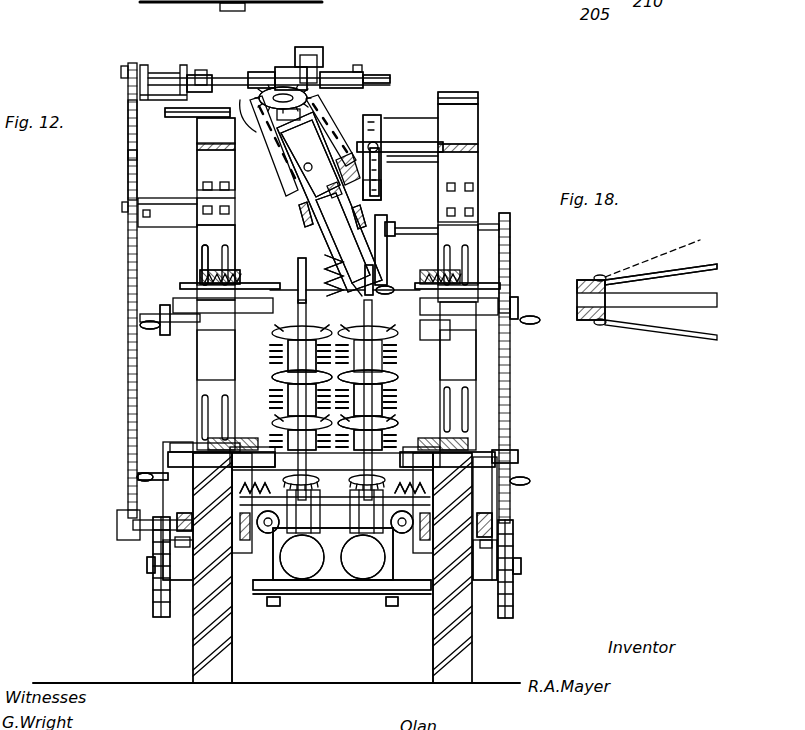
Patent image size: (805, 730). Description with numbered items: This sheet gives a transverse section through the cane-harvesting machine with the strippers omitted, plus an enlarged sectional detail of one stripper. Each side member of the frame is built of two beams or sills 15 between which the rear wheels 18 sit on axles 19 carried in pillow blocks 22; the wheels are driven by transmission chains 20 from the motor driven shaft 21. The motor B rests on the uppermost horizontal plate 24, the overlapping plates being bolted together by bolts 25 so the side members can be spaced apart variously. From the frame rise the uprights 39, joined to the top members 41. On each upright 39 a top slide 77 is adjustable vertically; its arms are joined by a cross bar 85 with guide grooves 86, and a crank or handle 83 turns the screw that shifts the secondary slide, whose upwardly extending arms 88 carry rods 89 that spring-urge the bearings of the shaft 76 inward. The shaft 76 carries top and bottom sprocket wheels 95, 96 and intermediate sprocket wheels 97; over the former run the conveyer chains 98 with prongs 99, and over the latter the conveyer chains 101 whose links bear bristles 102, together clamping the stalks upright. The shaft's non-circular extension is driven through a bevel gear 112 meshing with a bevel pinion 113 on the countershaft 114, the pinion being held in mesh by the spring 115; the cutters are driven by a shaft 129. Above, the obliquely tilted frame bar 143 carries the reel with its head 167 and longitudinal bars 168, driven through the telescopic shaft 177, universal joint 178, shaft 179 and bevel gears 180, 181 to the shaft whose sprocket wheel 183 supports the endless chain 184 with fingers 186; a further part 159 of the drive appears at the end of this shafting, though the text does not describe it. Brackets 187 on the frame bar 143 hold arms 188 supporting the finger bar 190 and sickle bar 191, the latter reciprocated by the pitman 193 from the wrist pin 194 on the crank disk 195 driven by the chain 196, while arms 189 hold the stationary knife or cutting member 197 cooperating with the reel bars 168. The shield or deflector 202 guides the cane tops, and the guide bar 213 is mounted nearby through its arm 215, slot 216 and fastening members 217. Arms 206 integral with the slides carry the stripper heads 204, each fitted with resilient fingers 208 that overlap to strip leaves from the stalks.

In FIG. 12, the fastening members 217 is at (240, 100).
In FIG. 12, the sprocket wheel 183 is at (262, 105).
In FIG. 12, the telescopic shaft 177 is at (256, 72).
In FIG. 12, the bevel gear 181 is at (290, 67).
In FIG. 12, the universal joint 178 is at (300, 88).
In FIG. 12, the bevel gear 180 is at (323, 50).
In FIG. 12, the shaft 159 is at (355, 70).
In FIG. 12, the shaft 179 is at (375, 78).
In FIG. 12, the endless chain 184 is at (366, 140).
In FIG. 12, the laterally extending brackets 187 is at (382, 137).
In FIG. 12, the arms 188 is at (470, 113).
In FIG. 12, the top members 41 is at (468, 131).
In FIG. 12, the fingers 186 is at (235, 130).
In FIG. 12, the arm 215 is at (128, 128).
In FIG. 12, the slot 216 is at (128, 160).
In FIG. 12, the guide bar 213 is at (290, 152).
In FIG. 12, the arms 189 is at (440, 178).
In FIG. 12, the frame bar 143 is at (380, 177).
In FIG. 12, the wrist pin 194 is at (381, 206).
In FIG. 12, the crank disk 195 is at (396, 230).
In FIG. 12, the shield or deflector 202 is at (312, 172).
In FIG. 12, the head 167 is at (320, 210).
In FIG. 12, the longitudinal bars 168 is at (350, 218).
In FIG. 12, the stationary knife or cutting member 197 is at (345, 240).
In FIG. 12, the pitman 193 is at (388, 270).
In FIG. 12, the chain 196 is at (512, 262).
In FIG. 12, the arms 88 is at (472, 286).
In FIG. 12, the cross bar 85 is at (520, 312).
In FIG. 12, the top slide 77 is at (490, 338).
In FIG. 12, the crank or handle 83 is at (540, 320).
In FIG. 12, the uprights 39 is at (475, 352).
In FIG. 12, the prongs 99 is at (530, 386).
In FIG. 12, the conveyer chains 98 is at (470, 386).
In FIG. 12, the conveyer chains 101 is at (475, 400).
In FIG. 12, the bristles 102 is at (480, 420).
In FIG. 12, the rods 89 is at (505, 455).
In FIG. 12, the top sprocket wheels 95 is at (270, 347).
In FIG. 12, the arms 206 is at (232, 340).
In FIG. 12, the shaft 76 is at (268, 368).
In FIG. 12, the intermediate sprocket wheels 97 is at (432, 392).
In FIG. 12, the bottom sprocket wheels 96 is at (396, 430).
In FIG. 12, the finger bar 190 is at (345, 285).
In FIG. 12, the sickle bar 191 is at (375, 294).
In FIG. 12, the guide grooves 86 is at (210, 281).
In FIG. 12, the countershaft 114 is at (280, 522).
In FIG. 12, the bevel gear 112 is at (300, 500).
In FIG. 12, the bevel pinion 113 is at (336, 530).
In FIG. 12, the spring 115 is at (332, 557).
In FIG. 12, the shaft 129 is at (250, 540).
In FIG. 12, the beams or sills 15 is at (176, 516).
In FIG. 12, the axles 19 is at (147, 570).
In FIG. 12, the transmission chains 20 is at (154, 594).
In FIG. 12, the pillow blocks 22 is at (182, 612).
In FIG. 12, the motor driven shaft 21 is at (290, 594).
In FIG. 12, the bolts 25 is at (277, 606).
In FIG. 12, the horizontal plate 24 is at (326, 600).
In FIG. 12, the motor B is at (338, 596).
In FIG. 12, the rear wheels 18 is at (205, 686).
In FIG. 18, the heads 204 is at (586, 280).
In FIG. 18, the resilient fingers 208 is at (688, 292).